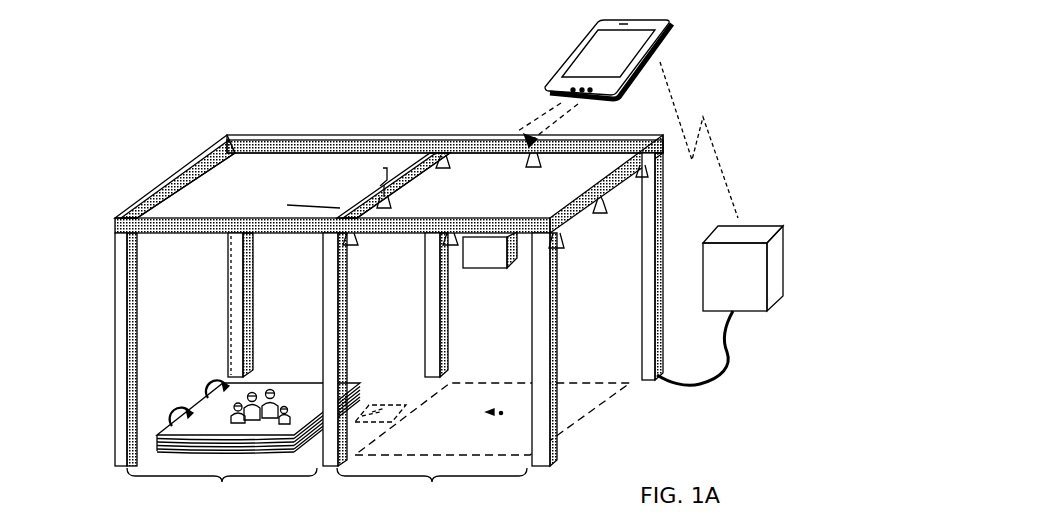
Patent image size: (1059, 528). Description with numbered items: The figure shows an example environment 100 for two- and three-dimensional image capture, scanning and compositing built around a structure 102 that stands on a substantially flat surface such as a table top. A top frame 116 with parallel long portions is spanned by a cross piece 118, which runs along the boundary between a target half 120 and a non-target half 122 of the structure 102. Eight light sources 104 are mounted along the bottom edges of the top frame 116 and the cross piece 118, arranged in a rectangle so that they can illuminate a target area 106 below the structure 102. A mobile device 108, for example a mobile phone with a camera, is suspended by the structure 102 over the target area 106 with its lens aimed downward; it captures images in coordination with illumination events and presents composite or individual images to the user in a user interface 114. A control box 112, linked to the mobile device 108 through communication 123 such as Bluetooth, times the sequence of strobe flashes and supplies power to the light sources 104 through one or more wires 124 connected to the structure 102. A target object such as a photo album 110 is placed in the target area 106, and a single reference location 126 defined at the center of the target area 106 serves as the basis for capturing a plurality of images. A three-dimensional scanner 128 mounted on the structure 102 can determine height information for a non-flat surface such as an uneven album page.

The environment 100 is at (102, 47).
The structure 102 is at (105, 465).
The light sources 104 is at (532, 152).
The target area 106 is at (512, 383).
The mobile device 108 is at (545, 89).
The photo album 110 is at (207, 398).
The control box 112 is at (748, 300).
The user interface 114 is at (593, 63).
The top frame 116 is at (204, 183).
The cross piece 118 is at (300, 206).
The target half 120 is at (432, 488).
The non-target half 122 is at (222, 488).
The communication 123 is at (765, 94).
The wires 124 is at (690, 388).
The reference location 126 is at (486, 412).
The 3D scanner 128 is at (499, 259).